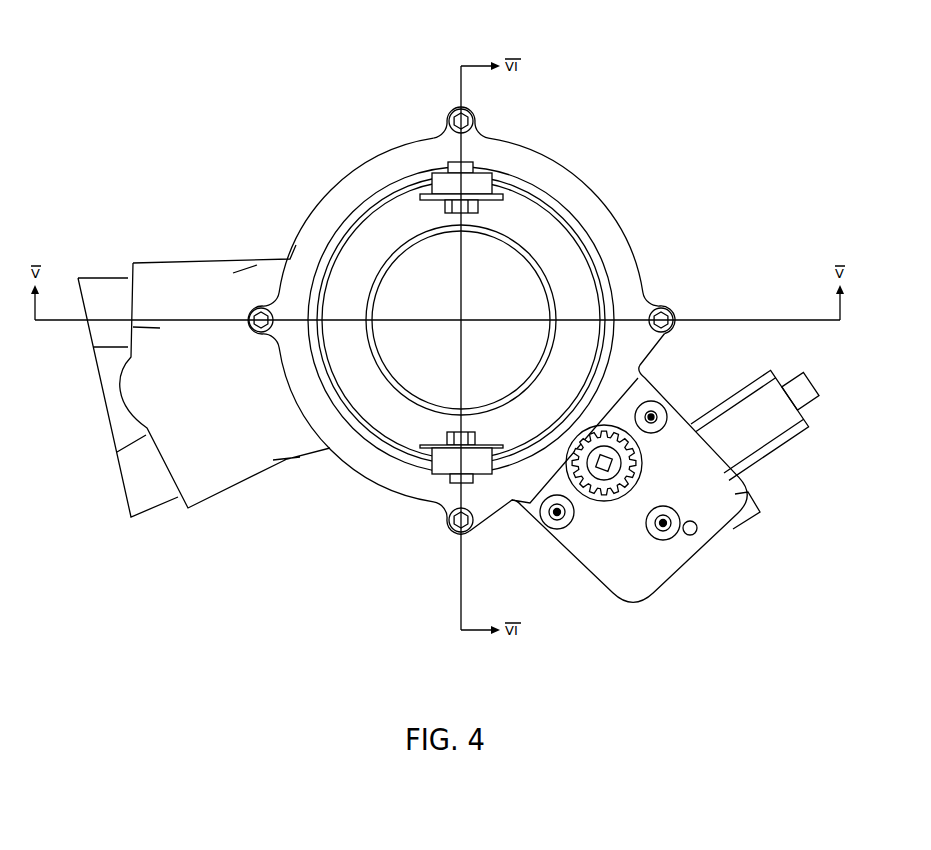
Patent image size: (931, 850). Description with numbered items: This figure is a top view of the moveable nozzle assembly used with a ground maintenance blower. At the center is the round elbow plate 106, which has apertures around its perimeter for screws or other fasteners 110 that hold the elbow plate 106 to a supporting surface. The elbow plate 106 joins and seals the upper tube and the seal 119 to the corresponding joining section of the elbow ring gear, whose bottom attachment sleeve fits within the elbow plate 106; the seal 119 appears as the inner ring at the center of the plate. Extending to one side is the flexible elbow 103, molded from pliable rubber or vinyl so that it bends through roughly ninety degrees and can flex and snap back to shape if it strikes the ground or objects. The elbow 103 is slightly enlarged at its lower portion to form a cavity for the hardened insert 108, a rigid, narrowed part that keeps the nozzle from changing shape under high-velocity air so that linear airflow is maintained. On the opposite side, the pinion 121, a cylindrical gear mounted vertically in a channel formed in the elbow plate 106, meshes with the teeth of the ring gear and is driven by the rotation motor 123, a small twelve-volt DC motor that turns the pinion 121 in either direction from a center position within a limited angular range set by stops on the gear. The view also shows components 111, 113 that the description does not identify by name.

The flexible elbow 103 is at (242, 473).
The elbow plate 106 is at (652, 587).
The hardened insert 108 is at (120, 483).
The fasteners 110 is at (652, 416).
The flange ring 111 is at (542, 193).
The cover ring 113 is at (402, 433).
The seal 119 is at (530, 257).
The pinion 121 is at (574, 463).
The rotation motor 123 is at (767, 432).